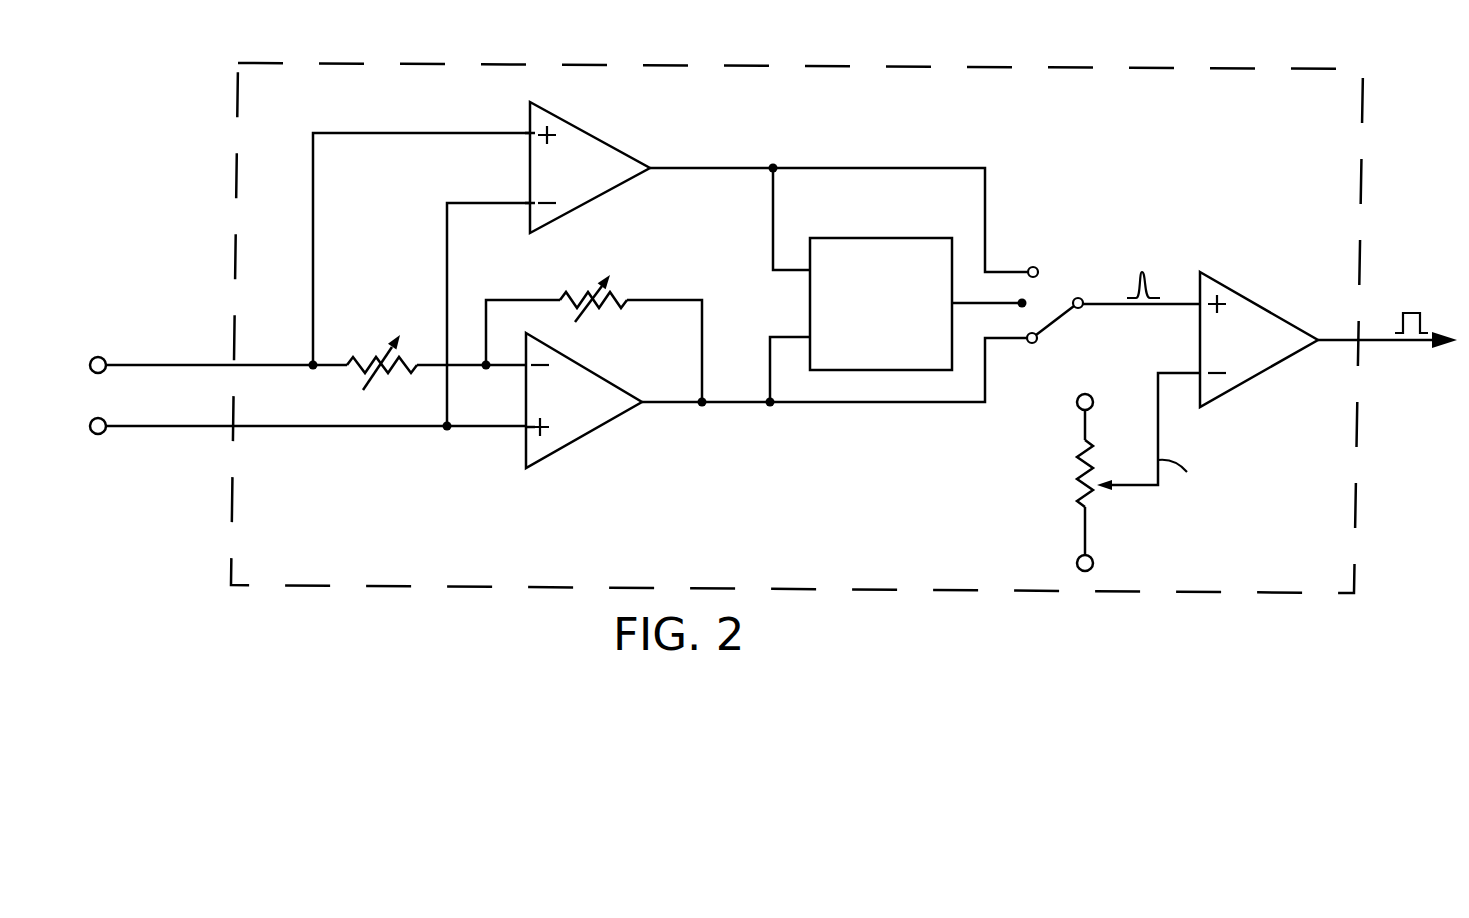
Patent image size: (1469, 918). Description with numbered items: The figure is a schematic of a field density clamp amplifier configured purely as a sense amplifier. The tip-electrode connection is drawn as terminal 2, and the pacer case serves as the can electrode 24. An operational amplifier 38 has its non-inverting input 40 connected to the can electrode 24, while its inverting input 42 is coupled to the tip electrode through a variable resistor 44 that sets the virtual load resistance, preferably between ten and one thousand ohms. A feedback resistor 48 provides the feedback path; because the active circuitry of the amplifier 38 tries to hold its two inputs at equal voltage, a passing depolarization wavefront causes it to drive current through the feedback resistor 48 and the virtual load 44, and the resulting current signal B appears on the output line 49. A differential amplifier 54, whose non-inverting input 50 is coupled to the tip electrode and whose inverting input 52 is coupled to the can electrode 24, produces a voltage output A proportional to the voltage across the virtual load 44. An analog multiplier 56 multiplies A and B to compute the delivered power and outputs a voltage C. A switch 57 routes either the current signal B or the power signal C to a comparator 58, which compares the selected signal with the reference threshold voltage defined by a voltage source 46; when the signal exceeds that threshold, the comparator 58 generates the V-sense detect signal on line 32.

The first input terminal 2 is at (106, 358).
The can electrode 24 is at (106, 420).
The variable resistor 44 is at (400, 370).
The inverting input 42 is at (524, 372).
The non-inverting input 40 is at (524, 432).
The operational amplifier 38 is at (617, 418).
The feedback resistor 48 is at (597, 310).
The amplifier output line 49 is at (913, 402).
The non-inverting input 50 is at (530, 132).
The inverting input 52 is at (530, 200).
The differential amplifier 54 is at (605, 138).
The analog multiplier 56 is at (875, 238).
The switch 57 is at (1065, 265).
The comparator 58 is at (1273, 310).
The voltage source 46 is at (1075, 495).
The line 32 is at (1388, 340).